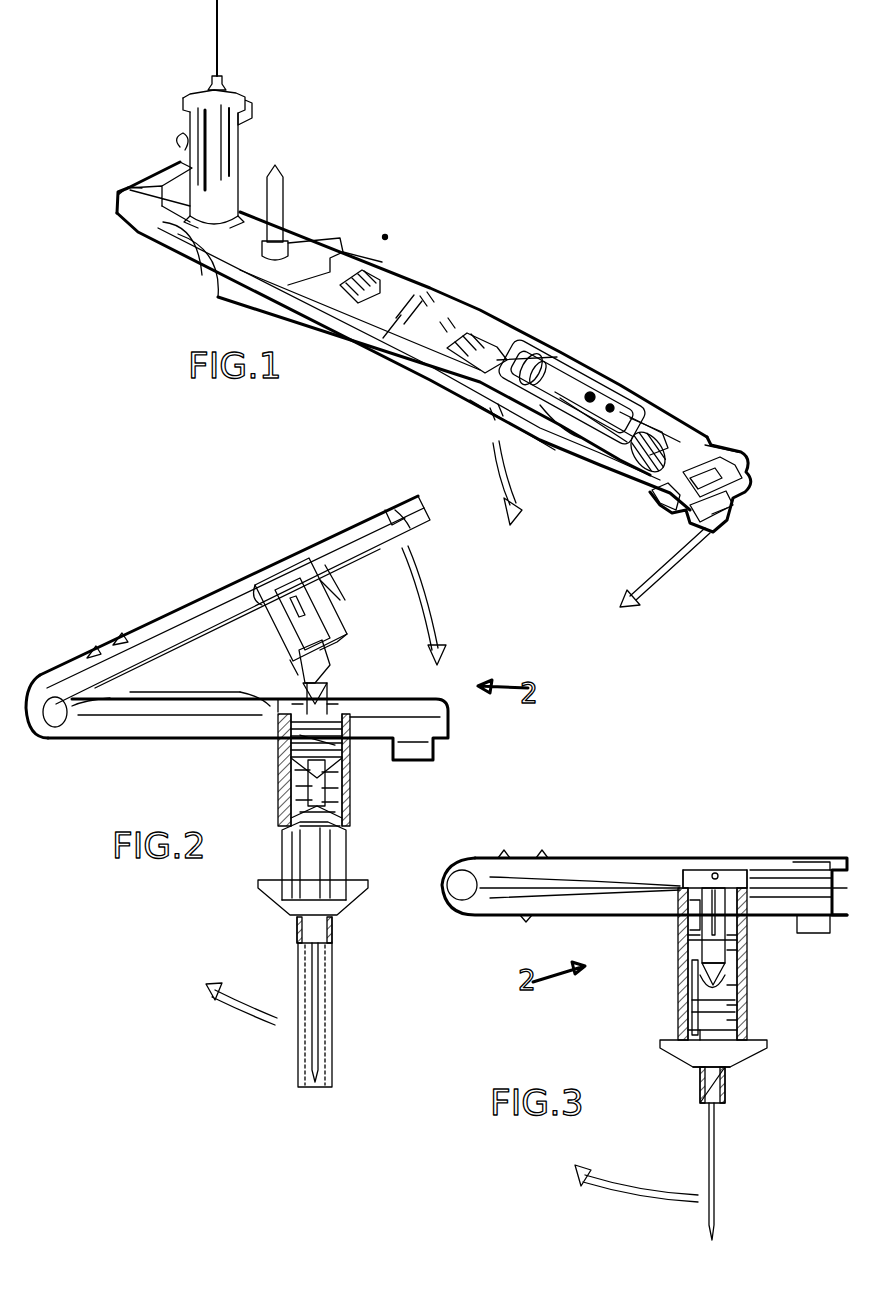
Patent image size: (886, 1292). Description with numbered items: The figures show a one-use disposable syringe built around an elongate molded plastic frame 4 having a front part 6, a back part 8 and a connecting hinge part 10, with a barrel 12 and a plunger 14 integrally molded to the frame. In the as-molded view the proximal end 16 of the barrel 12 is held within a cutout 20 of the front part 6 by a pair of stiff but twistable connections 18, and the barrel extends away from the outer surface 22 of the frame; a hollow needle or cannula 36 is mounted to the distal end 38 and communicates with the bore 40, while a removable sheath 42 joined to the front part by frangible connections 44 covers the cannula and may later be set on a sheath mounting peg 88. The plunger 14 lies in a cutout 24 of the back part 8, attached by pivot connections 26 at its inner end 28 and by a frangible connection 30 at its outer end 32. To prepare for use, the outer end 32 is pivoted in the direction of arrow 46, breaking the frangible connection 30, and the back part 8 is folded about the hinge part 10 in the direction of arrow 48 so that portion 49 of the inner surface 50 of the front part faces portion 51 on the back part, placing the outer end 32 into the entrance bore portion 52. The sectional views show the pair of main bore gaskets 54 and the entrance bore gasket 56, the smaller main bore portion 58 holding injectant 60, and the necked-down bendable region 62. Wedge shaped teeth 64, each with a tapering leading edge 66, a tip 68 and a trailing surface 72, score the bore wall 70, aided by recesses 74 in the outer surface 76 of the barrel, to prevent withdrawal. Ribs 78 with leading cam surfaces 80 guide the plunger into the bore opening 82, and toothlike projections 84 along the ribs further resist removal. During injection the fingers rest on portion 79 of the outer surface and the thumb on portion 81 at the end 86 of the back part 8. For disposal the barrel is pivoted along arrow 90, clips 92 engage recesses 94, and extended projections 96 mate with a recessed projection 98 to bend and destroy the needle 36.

In FIG. 1, the elongate frame 4 is at (420, 285).
In FIG. 2, the elongate frame 4 is at (70, 660).
In FIG. 3, the elongate frame 4 is at (598, 855).
In FIG. 1, the front part 6 is at (312, 292).
In FIG. 2, the front part 6 is at (105, 745).
In FIG. 1, the back part 8 is at (560, 358).
In FIG. 2, the back part 8 is at (160, 620).
In FIG. 3, the back part 8 is at (630, 855).
In FIG. 1, the connecting hinge part 10 is at (438, 316).
In FIG. 2, the connecting hinge part 10 is at (42, 740).
In FIG. 1, the barrel 12 is at (250, 158).
In FIG. 2, the barrel 12 is at (282, 820).
In FIG. 3, the barrel 12 is at (680, 968).
In FIG. 1, the plunger 14 is at (648, 412).
In FIG. 2, the plunger 14 is at (318, 642).
In FIG. 3, the plunger 14 is at (688, 950).
In FIG. 1, the proximal end 16 is at (218, 283).
In FIG. 1, the twistable connections 18 is at (150, 228).
In FIG. 1, the cutout 20 is at (198, 262).
In FIG. 1, the outer surface 22 is at (396, 270).
In FIG. 2, the outer surface 22 is at (215, 596).
In FIG. 1, the cutout 24 is at (575, 455).
In FIG. 1, the pivot connections 26 is at (672, 414).
In FIG. 2, the pivot connections 26 is at (262, 585).
In FIG. 3, the pivot connections 26 is at (715, 872).
In FIG. 1, the inner end 28 is at (618, 470).
In FIG. 2, the inner end 28 is at (285, 580).
In FIG. 3, the inner end 28 is at (728, 890).
In FIG. 1, the frangible connection 30 is at (528, 360).
In FIG. 1, the outer end 32 is at (473, 415).
In FIG. 2, the outer end 32 is at (330, 745).
In FIG. 3, the outer end 32 is at (690, 1068).
In FIG. 1, the hollow needle or cannula 36 is at (218, 72).
In FIG. 2, the hollow needle or cannula 36 is at (318, 1022).
In FIG. 1, the distal end 38 is at (226, 100).
In FIG. 2, the bore 40 is at (330, 795).
In FIG. 3, the bore 40 is at (692, 985).
In FIG. 1, the removable sheath 42 is at (284, 200).
In FIG. 2, the removable sheath 42 is at (330, 985).
In FIG. 1, the frangible connections 44 is at (328, 240).
In FIG. 1, the arrow 46 is at (491, 483).
In FIG. 1, the arrow 48 is at (672, 565).
In FIG. 2, the arrow 48 is at (425, 612).
In FIG. 2, the portion of inner surface 49 is at (131, 705).
In FIG. 1, the inner surface 50 is at (323, 330).
In FIG. 2, the inner surface 50 is at (180, 699).
In FIG. 2, the portion of inner surface 51 is at (99, 700).
In FIG. 2, the entrance bore portion 52 is at (254, 692).
In FIG. 3, the entrance bore portion 52 is at (690, 870).
In FIG. 2, the main bore gaskets 54 is at (285, 748).
In FIG. 2, the entrance bore gasket 56 is at (335, 790).
In FIG. 3, the entrance bore gasket 56 is at (740, 1022).
In FIG. 2, the main bore portion 58 is at (340, 815).
In FIG. 3, the main bore portion 58 is at (740, 953).
In FIG. 2, the injectant 60 is at (300, 778).
In FIG. 2, the bendable region 62 is at (322, 680).
In FIG. 3, the bendable region 62 is at (740, 975).
In FIG. 1, the wedge shaped teeth 64 is at (592, 392).
In FIG. 2, the wedge shaped teeth 64 is at (285, 688).
In FIG. 3, the wedge shaped teeth 64 is at (740, 998).
In FIG. 2, the leading edge 66 is at (292, 660).
In FIG. 3, the leading edge 66 is at (690, 1043).
In FIG. 2, the tip 68 is at (330, 676).
In FIG. 3, the tip 68 is at (685, 1030).
In FIG. 2, the bore wall 70 is at (300, 800).
In FIG. 3, the bore wall 70 is at (690, 1012).
In FIG. 1, the trailing surface 72 is at (612, 403).
In FIG. 3, the trailing surface 72 is at (690, 995).
In FIG. 1, the recesses 74 is at (205, 128).
In FIG. 2, the recesses 74 is at (305, 860).
In FIG. 1, the outer surface 76 is at (248, 158).
In FIG. 2, the outer surface 76 is at (285, 900).
In FIG. 2, the ribs 78 is at (298, 590).
In FIG. 3, the ribs 78 is at (690, 898).
In FIG. 2, the portion of outer surface 79 is at (403, 748).
In FIG. 2, the leading cam surfaces 80 is at (340, 600).
In FIG. 3, the leading cam surfaces 80 is at (740, 935).
In FIG. 2, the portion of inner surface 81 is at (350, 526).
In FIG. 2, the bore opening 82 is at (340, 698).
In FIG. 3, the bore opening 82 is at (688, 932).
In FIG. 2, the toothlike projections 84 is at (305, 598).
In FIG. 2, the end 86 is at (395, 518).
In FIG. 1, the sheath mounting peg 88 is at (725, 510).
In FIG. 2, the arrow 90 is at (241, 1012).
In FIG. 3, the arrow 90 is at (644, 1171).
In FIG. 1, the clips 92 is at (178, 147).
In FIG. 1, the recesses 94 is at (728, 442).
In FIG. 1, the extended projections 96 is at (478, 336).
In FIG. 1, the recessed projection 98 is at (375, 272).